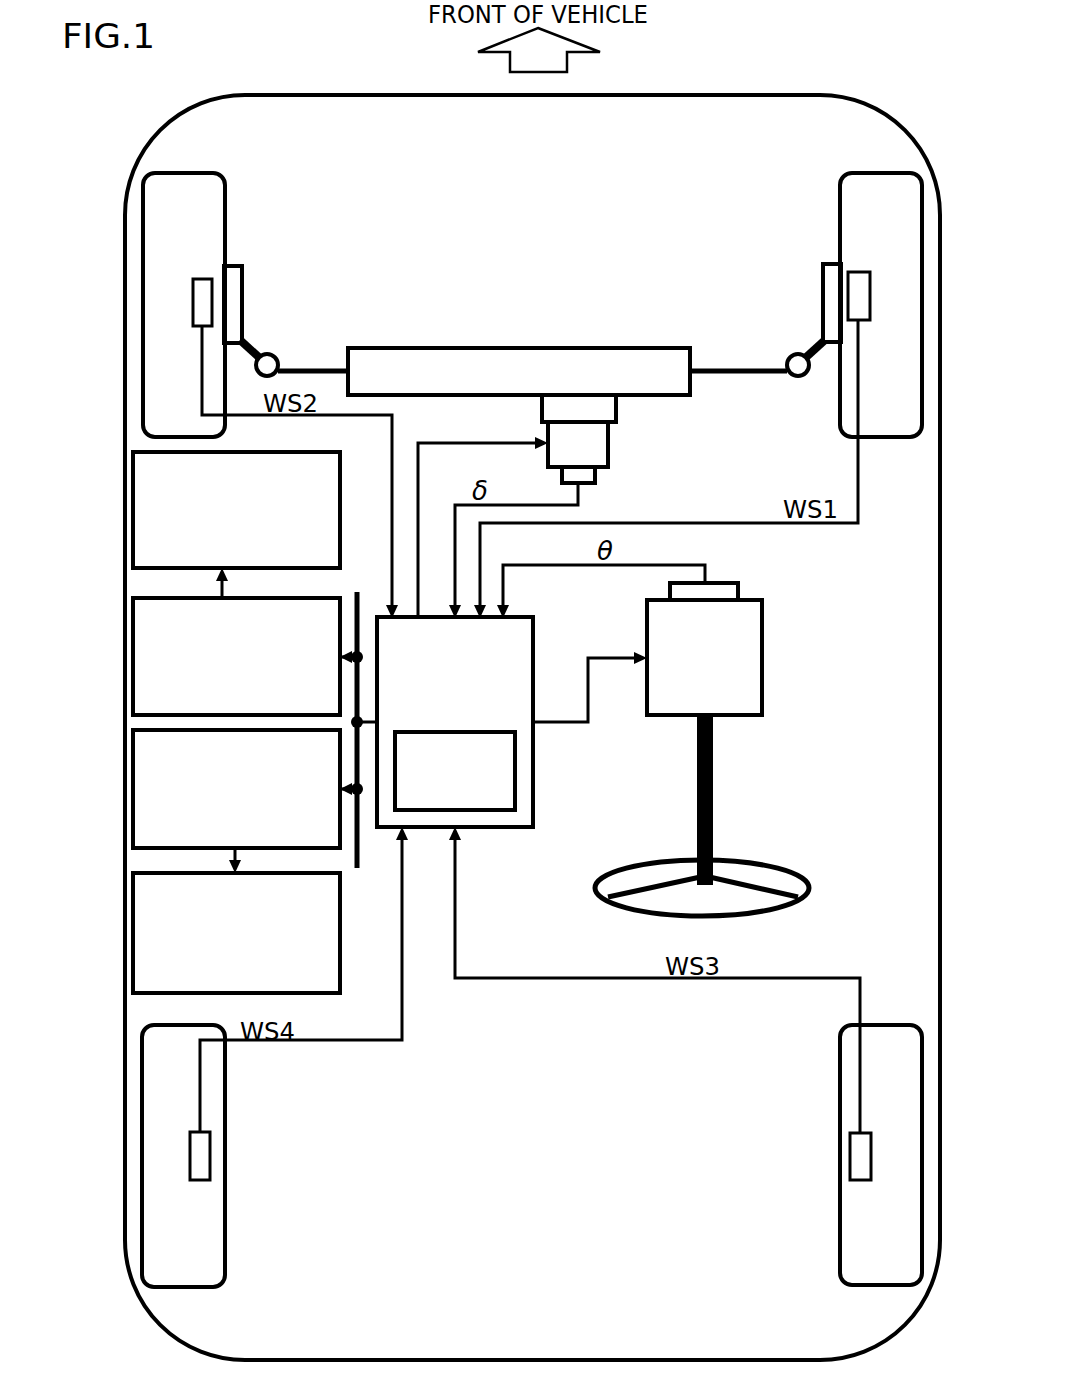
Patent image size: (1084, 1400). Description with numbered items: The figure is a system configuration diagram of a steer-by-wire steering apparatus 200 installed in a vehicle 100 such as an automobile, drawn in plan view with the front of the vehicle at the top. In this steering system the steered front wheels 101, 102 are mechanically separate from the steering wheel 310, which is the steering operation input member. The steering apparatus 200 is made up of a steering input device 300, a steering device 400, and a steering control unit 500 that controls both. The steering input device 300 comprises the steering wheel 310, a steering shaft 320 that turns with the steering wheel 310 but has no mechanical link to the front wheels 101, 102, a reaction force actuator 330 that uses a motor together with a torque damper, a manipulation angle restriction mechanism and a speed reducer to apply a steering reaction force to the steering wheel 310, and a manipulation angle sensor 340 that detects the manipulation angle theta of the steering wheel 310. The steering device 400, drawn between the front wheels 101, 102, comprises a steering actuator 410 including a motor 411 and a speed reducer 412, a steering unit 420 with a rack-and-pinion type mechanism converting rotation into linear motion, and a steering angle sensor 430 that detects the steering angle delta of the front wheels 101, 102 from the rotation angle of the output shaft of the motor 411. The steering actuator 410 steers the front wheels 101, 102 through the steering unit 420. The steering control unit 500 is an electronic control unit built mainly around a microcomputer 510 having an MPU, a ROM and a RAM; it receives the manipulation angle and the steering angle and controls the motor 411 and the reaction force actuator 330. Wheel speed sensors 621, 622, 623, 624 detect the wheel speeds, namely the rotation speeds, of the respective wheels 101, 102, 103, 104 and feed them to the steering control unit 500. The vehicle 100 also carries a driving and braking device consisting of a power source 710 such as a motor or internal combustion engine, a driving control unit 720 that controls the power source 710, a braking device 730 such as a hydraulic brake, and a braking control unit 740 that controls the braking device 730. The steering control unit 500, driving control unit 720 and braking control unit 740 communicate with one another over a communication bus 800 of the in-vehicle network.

The vehicle 100 is at (778, 94).
The front wheel 101 is at (893, 172).
The front wheel 102 is at (172, 172).
The wheel 103 is at (840, 1248).
The wheel 104 is at (215, 1243).
The steer-by-wire steering apparatus 200 is at (588, 1042).
The steering input device 300 is at (752, 757).
The steering wheel 310 is at (770, 915).
The steering shaft 320 is at (713, 822).
The reaction force actuator 330 is at (762, 645).
The manipulation angle sensor 340 is at (738, 586).
The steering device 400 is at (567, 369).
The steering actuator 410 is at (664, 433).
The motor 411 is at (608, 443).
The speed reducer 412 is at (616, 405).
The steering unit 420 is at (390, 348).
The steering angle sensor 430 is at (595, 475).
The steering control unit 500 is at (470, 785).
The microcomputer 510 is at (475, 810).
The wheel speed sensor 621 is at (858, 272).
The wheel speed sensor 622 is at (205, 279).
The wheel speed sensor 623 is at (850, 1157).
The wheel speed sensor 624 is at (210, 1155).
The power source 710 is at (133, 505).
The driving control unit 720 is at (133, 665).
The braking device 730 is at (133, 940).
The braking control unit 740 is at (133, 800).
The communication bus 800 is at (362, 868).